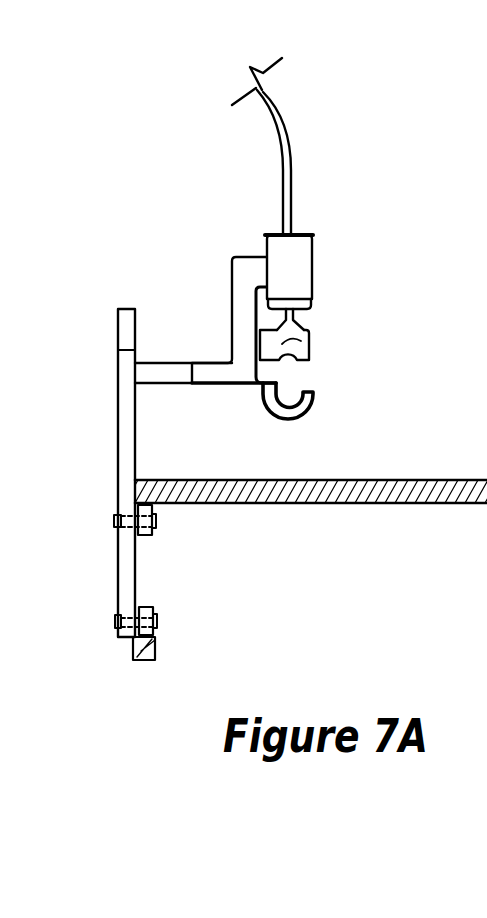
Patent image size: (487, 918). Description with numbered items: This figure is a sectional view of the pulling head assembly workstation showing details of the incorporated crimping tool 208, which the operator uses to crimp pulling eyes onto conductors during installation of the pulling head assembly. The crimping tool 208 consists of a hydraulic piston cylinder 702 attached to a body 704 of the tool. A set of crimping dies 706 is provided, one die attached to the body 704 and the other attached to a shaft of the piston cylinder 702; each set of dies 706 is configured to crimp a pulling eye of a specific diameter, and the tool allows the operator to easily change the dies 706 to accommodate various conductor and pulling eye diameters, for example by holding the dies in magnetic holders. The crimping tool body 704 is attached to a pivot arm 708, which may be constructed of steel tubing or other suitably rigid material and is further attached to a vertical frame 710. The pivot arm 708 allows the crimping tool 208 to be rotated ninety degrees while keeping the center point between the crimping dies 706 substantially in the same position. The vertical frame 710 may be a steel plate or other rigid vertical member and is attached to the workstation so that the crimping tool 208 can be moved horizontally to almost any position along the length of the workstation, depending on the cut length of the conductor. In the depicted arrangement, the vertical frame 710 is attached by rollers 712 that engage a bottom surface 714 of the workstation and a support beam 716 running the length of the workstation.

The crimping tool 208 is at (203, 218).
The hydraulic piston cylinder 702 is at (298, 277).
The body 704 is at (240, 338).
The crimping dies 706 is at (307, 392).
The pivot arm 708 is at (150, 370).
The vertical frame 710 is at (125, 382).
The rollers 712 is at (148, 537).
The bottom surface 714 is at (370, 503).
The support beam 716 is at (136, 661).